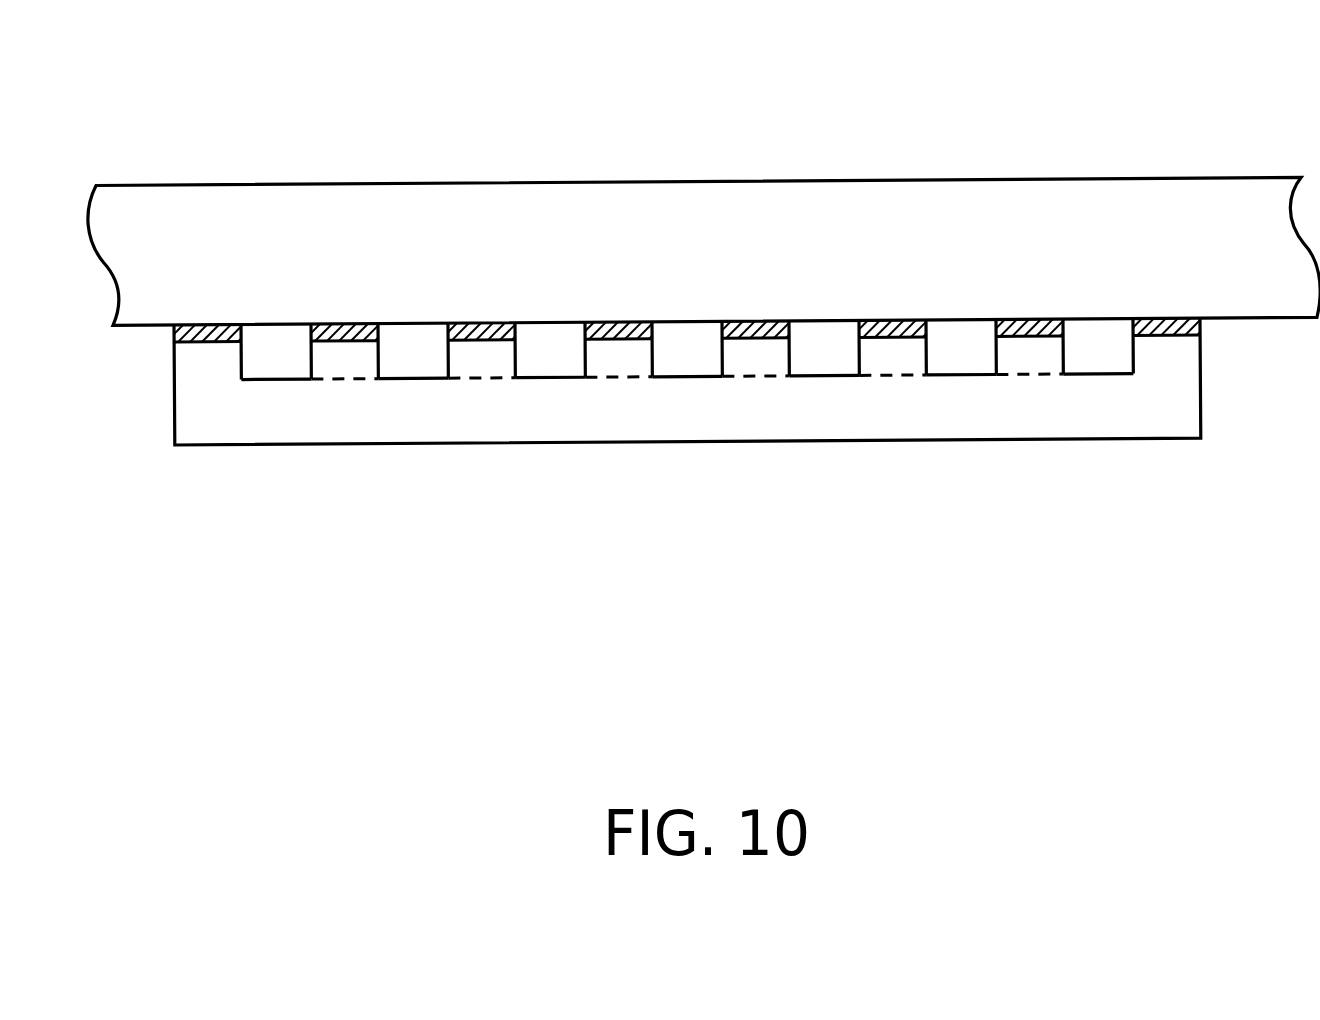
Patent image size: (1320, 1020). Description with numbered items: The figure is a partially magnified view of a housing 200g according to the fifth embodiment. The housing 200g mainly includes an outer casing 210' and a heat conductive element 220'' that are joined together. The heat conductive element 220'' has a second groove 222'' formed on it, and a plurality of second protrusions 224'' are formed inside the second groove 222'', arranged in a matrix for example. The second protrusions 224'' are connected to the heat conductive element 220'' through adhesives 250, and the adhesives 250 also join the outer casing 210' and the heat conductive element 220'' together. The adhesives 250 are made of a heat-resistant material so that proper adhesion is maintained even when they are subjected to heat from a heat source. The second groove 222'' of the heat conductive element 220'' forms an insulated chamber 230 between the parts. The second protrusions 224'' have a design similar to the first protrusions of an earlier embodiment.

The housing 200g is at (1255, 75).
The outer casing 210' is at (704, 203).
The heat conductive element 220'' is at (713, 262).
The second groove 222'' is at (693, 435).
The second protrusions 224'' is at (687, 440).
The insulated chamber 230 is at (1087, 328).
The adhesives 250 is at (210, 324).